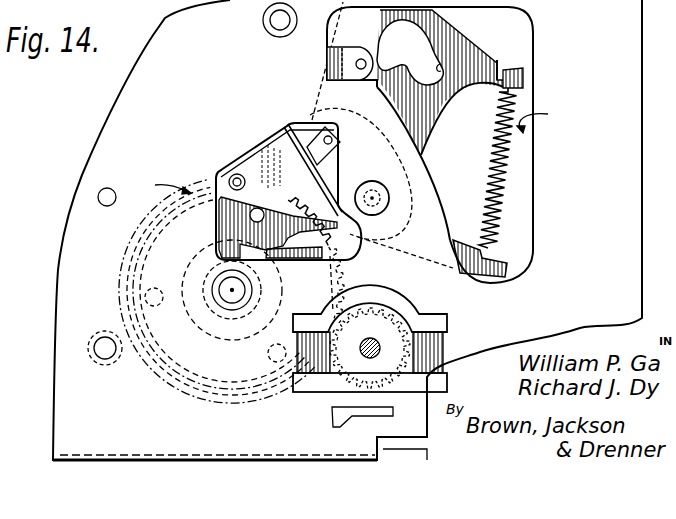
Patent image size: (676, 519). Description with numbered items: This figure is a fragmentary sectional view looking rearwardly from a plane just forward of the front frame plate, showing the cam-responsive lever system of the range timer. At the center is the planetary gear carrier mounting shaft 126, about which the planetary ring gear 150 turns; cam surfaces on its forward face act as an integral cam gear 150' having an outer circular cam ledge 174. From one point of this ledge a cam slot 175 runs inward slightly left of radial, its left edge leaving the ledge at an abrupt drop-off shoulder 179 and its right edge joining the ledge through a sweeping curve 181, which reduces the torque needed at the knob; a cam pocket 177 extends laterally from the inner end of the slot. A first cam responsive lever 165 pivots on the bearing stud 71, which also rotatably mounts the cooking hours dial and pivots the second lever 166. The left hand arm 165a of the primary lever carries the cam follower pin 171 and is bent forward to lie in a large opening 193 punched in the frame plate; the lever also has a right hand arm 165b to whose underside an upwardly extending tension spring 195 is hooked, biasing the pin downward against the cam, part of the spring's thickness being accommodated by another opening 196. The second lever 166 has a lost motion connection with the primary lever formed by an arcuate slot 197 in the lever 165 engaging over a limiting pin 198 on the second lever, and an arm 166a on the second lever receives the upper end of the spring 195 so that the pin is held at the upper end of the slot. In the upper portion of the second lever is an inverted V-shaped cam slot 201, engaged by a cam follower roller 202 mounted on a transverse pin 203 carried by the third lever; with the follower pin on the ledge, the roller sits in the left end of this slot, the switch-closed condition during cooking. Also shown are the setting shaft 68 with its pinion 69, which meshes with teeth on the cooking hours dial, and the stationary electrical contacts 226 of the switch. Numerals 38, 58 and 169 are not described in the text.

The stationary electrical contacts 226 is at (276, 32).
The hole 38 is at (104, 352).
The hidden hole 58 is at (114, 365).
The planetary gear carrier mounting shaft 126 is at (230, 292).
The planetary ring gear 150 is at (192, 292).
The cam gear 150' is at (185, 291).
The circular cam ledge 174 is at (159, 186).
The first cam responsive lever 165 is at (248, 162).
The opening 193 is at (260, 137).
The drop-off shoulder 179 is at (308, 218).
The cam slot 175 is at (275, 167).
The limiting pin 198 is at (340, 123).
The cam pocket 177 is at (220, 233).
The sweeping curve 181 is at (303, 248).
The cam follower pin 171 is at (233, 177).
The left hand arm 165a is at (230, 183).
The arcuate slot 197 is at (315, 137).
The pin 169 is at (388, 192).
The bearing stud 71 is at (382, 206).
The opening 196 is at (454, 145).
The second lever 166 is at (422, 130).
The arm 166a is at (495, 56).
The cam follower roller 202 is at (410, 52).
The transverse pin 203 is at (373, 63).
The cam slot 201 is at (437, 65).
The tension spring 195 is at (503, 165).
The arm 165b is at (507, 264).
The pinion 69 is at (412, 307).
The setting shaft 68 is at (381, 348).